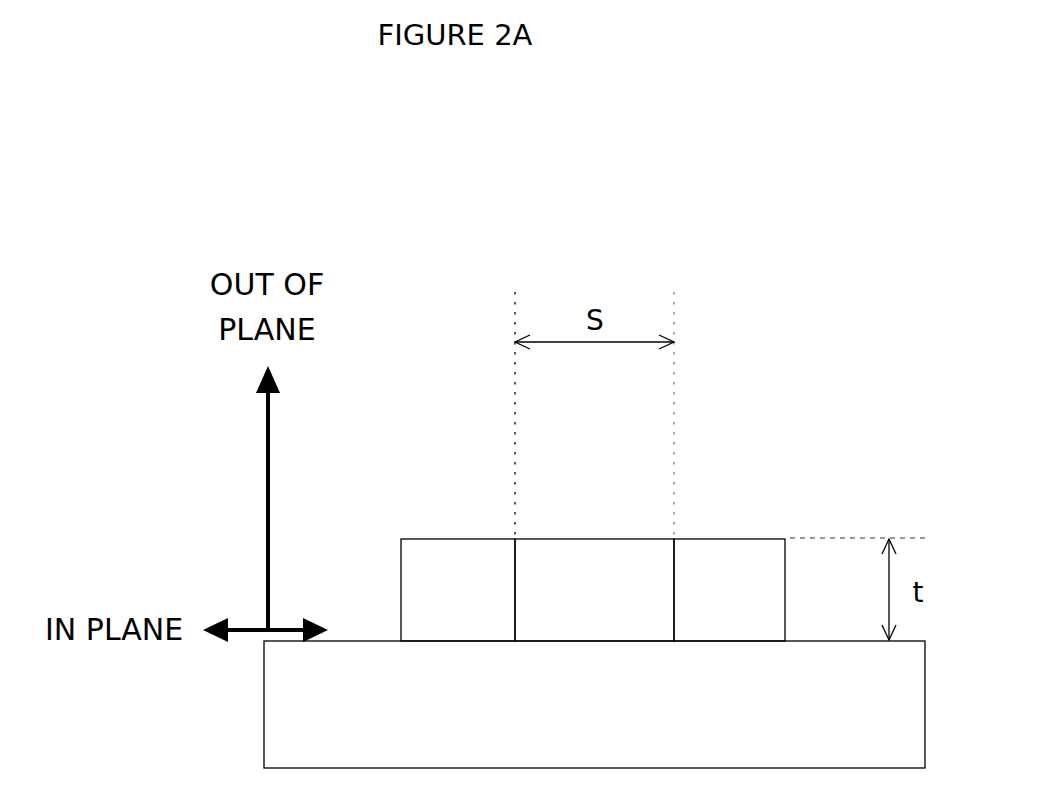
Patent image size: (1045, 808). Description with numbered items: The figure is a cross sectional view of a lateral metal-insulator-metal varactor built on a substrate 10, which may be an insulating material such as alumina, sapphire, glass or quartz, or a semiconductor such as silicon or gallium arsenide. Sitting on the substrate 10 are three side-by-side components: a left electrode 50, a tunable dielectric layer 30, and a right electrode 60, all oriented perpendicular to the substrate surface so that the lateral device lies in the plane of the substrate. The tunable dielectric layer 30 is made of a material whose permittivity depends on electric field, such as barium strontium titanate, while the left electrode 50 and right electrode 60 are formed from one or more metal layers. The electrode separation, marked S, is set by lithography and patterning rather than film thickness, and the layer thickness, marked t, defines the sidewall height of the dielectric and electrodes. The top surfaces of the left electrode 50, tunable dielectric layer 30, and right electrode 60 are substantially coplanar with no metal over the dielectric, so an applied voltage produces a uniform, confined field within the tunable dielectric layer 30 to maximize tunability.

The substrate 10 is at (299, 749).
The tunable dielectric layer 30 is at (531, 622).
The left electrode 50 is at (438, 622).
The right electrode 60 is at (693, 622).